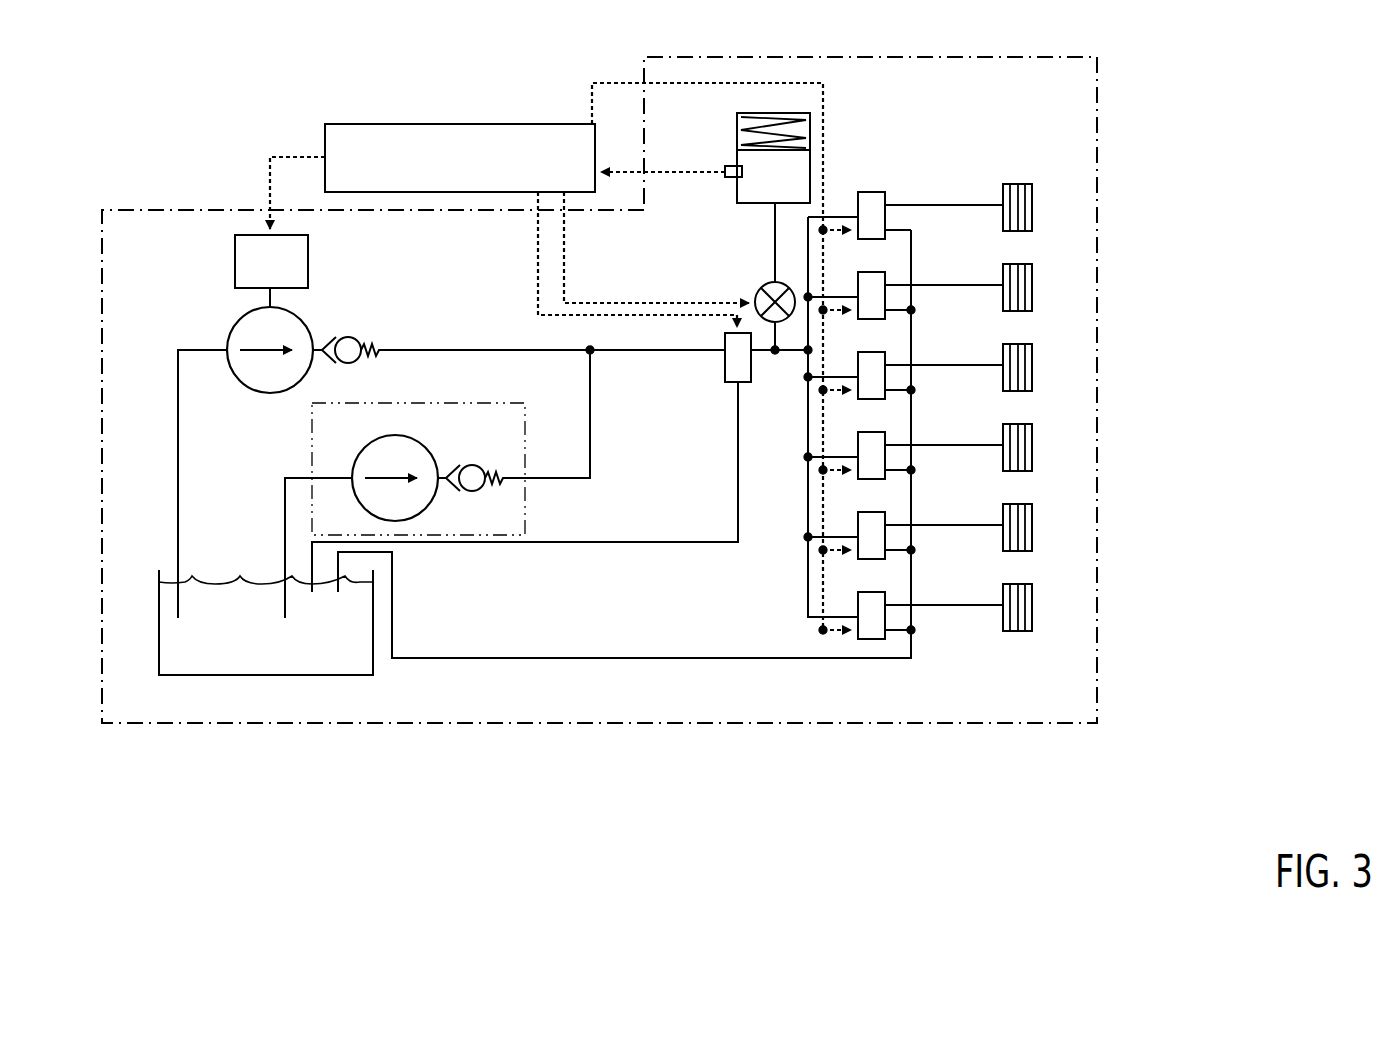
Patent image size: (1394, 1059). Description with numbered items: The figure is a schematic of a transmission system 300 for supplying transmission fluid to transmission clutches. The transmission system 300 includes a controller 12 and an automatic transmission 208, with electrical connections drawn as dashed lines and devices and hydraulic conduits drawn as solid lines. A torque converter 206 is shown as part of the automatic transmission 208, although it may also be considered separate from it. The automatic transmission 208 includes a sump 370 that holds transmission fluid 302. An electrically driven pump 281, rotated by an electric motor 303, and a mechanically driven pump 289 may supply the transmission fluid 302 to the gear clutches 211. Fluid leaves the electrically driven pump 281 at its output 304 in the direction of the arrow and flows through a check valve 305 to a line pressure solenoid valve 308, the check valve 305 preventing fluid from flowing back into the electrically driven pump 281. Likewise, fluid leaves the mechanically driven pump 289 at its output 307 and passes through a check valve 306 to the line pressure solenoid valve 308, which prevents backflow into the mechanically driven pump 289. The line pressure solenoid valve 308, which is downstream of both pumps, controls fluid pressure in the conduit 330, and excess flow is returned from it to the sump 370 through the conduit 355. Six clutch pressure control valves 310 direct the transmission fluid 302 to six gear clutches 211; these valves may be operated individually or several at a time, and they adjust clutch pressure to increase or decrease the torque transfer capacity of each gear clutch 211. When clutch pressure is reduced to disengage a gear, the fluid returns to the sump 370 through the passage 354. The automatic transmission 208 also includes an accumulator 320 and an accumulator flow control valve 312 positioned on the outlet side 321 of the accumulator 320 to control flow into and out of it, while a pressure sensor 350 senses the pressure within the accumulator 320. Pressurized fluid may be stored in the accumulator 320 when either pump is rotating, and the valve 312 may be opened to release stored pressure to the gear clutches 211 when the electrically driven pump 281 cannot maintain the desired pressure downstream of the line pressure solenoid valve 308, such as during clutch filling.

The transmission system 300 is at (128, 88).
The controller 12 is at (372, 124).
The automatic transmission 208 is at (1097, 723).
The electric motor 303 is at (271, 271).
The electrically driven pump 281 is at (265, 393).
The output 304 is at (320, 346).
The check valve 305 is at (352, 338).
The torque converter 206 is at (396, 404).
The mechanically driven pump 289 is at (368, 512).
The output 307 is at (443, 472).
The check valve 306 is at (474, 465).
The transmission fluid 302 is at (266, 622).
The sump 370 is at (275, 676).
The passage or conduit 355 is at (530, 543).
The passage 354 is at (520, 659).
The line pressure solenoid valve 308 is at (727, 383).
The passage or conduit 330 is at (760, 356).
The accumulator flow control valve 312 is at (766, 285).
The outlet side 321 is at (770, 208).
The accumulator 320 is at (757, 204).
The pressure sensor 350 is at (725, 178).
The clutch pressure control valves 310 is at (861, 192).
The gear clutches 211 is at (1032, 199).